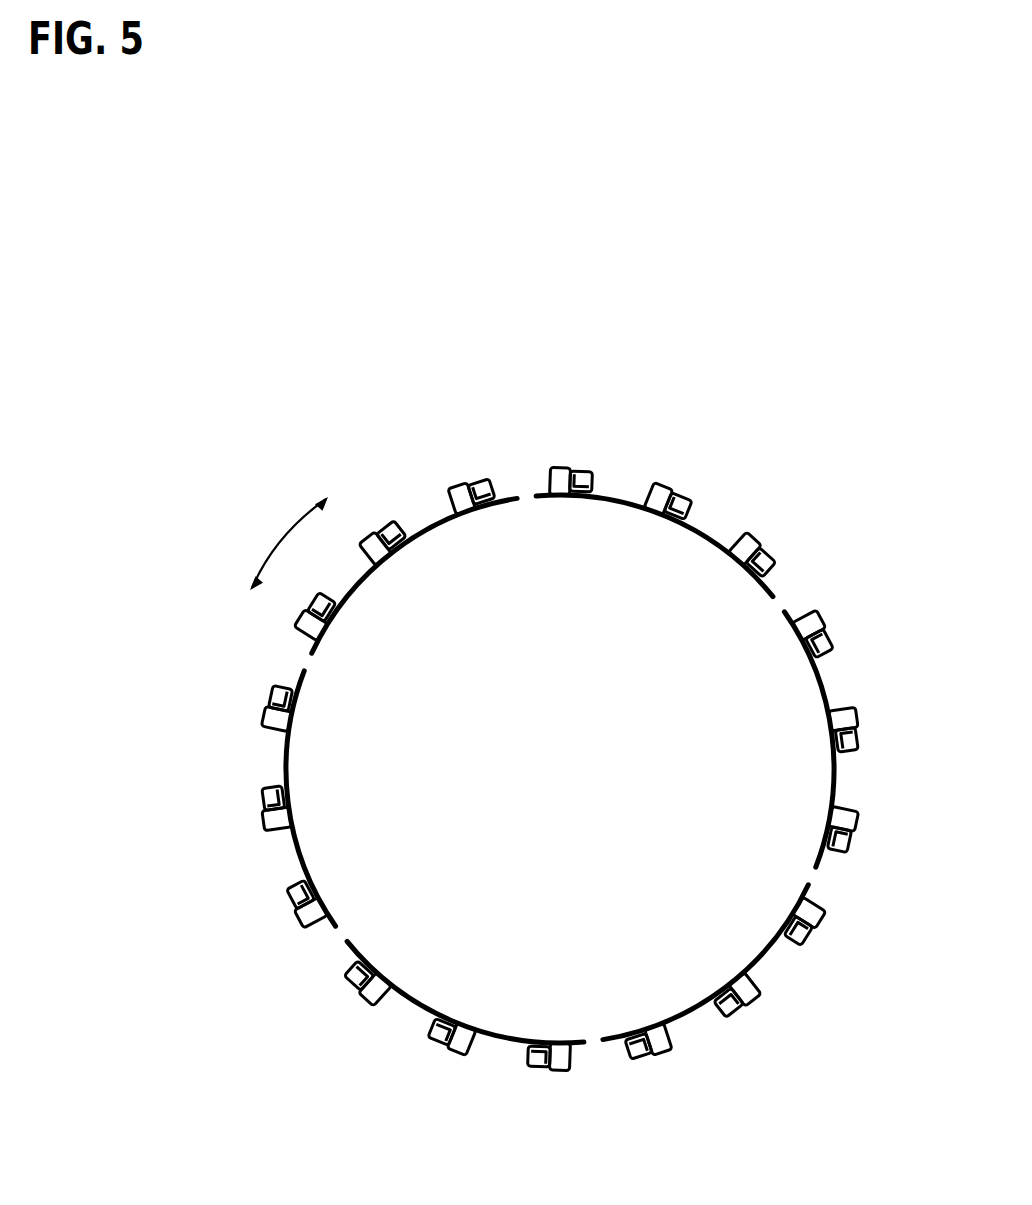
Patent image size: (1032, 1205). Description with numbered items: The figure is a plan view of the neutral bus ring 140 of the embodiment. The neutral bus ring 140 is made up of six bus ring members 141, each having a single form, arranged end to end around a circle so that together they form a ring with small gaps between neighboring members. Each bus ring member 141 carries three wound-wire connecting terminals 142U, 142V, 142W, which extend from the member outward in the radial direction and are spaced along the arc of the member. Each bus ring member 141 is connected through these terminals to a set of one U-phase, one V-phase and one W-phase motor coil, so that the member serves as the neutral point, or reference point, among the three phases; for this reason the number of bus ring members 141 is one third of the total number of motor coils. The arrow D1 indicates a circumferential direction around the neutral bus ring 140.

The neutral bus ring 140 is at (761, 438).
The bus ring member 141 is at (703, 540).
The wound-wire connecting terminal 142U is at (758, 540).
The wound-wire connecting terminal 142V is at (557, 468).
The wound-wire connecting terminal 142W is at (664, 485).
The rotation direction D1 is at (283, 540).